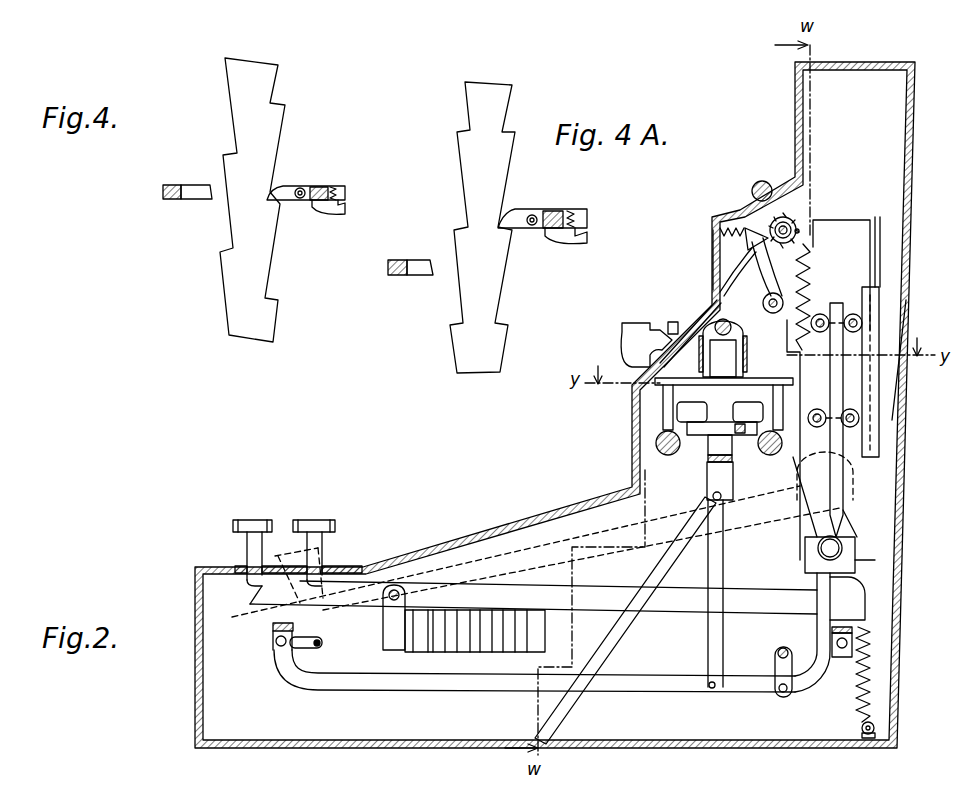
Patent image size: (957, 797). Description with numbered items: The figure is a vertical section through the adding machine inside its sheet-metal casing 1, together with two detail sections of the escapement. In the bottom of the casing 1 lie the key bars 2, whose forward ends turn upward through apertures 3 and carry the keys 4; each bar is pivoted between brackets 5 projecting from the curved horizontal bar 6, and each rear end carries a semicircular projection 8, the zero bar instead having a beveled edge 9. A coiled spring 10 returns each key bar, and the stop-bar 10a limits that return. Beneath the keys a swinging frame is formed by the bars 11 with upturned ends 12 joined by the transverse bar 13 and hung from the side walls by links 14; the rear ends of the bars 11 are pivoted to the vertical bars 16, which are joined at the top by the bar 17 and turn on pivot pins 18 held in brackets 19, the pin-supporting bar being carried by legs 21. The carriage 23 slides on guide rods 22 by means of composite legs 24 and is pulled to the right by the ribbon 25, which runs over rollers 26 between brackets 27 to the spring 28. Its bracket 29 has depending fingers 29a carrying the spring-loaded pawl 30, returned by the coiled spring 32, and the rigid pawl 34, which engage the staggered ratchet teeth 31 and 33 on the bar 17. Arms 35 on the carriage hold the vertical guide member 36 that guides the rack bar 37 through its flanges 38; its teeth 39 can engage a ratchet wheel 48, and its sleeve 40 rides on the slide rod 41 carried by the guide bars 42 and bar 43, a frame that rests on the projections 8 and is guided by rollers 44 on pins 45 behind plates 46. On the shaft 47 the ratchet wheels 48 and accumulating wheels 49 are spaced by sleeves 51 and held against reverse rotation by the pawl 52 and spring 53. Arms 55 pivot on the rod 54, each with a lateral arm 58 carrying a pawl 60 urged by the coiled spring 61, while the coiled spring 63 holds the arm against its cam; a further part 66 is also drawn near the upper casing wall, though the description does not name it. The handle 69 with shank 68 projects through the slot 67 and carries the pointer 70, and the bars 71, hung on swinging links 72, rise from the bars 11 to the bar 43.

In FIG. 2, the casing 1 is at (560, 512).
In FIG. 2, the key bars 2 is at (262, 590).
In FIG. 2, the apertures 3 is at (236, 566).
In FIG. 2, the keys 4 is at (313, 520).
In FIG. 2, the brackets 5 is at (388, 614).
In FIG. 2, the horizontal bar 6 is at (475, 642).
In FIG. 2, the upstanding projection 8 is at (866, 590).
In FIG. 2, the beveled upper edge 9 is at (852, 608).
In FIG. 2, the coiled spring 10 is at (866, 672).
In FIG. 2, the stop-bar 10a is at (842, 657).
In FIG. 2, the bars 11 is at (446, 676).
In FIG. 2, the upturned extremities 12 is at (272, 641).
In FIG. 2, the horizontal bar 13 is at (273, 627).
In FIG. 2, the links 14 is at (305, 650).
In FIG. 2, the vertical bars 16 is at (712, 650).
In FIG. 4, the bar 17 is at (252, 200).
In FIG. 4A, the bar 17 is at (482, 227).
In FIG. 2, the bar 17 is at (713, 495).
In FIG. 2, the pivot pins 18 is at (723, 500).
In FIG. 2, the brackets 19 is at (733, 482).
In FIG. 2, the legs 21 is at (655, 571).
In FIG. 2, the guide rods 22 is at (667, 455).
In FIG. 2, the carriage 23 is at (724, 389).
In FIG. 2, the composite legs 24 is at (662, 430).
In FIG. 2, the flexible tape or ribbon 25 is at (723, 358).
In FIG. 2, the rollers 26 is at (743, 340).
In FIG. 2, the brackets 27 is at (747, 352).
In FIG. 2, the spring 28 is at (728, 322).
In FIG. 2, the bracket 29 is at (705, 410).
In FIG. 4, the depending fingers 29a is at (172, 185).
In FIG. 4A, the depending fingers 29a is at (553, 213).
In FIG. 2, the depending fingers 29a is at (752, 410).
In FIG. 4, the pawl 30 is at (282, 188).
In FIG. 4A, the pawl 30 is at (514, 210).
In FIG. 2, the pawl 30 is at (740, 436).
In FIG. 4, the ratchet teeth 31 is at (279, 105).
In FIG. 4A, the ratchet teeth 31 is at (506, 130).
In FIG. 4, the coiled spring 32 is at (347, 197).
In FIG. 4A, the coiled spring 32 is at (580, 222).
In FIG. 4, the ratchet teeth 33 is at (232, 152).
In FIG. 4A, the ratchet teeth 33 is at (464, 130).
In FIG. 4, the rigid pawl 34 is at (197, 199).
In FIG. 4A, the rigid pawl 34 is at (418, 262).
In FIG. 2, the rigid pawl 34 is at (714, 439).
In FIG. 2, the arms 35 is at (801, 395).
In FIG. 2, the vertical guide member 36 is at (900, 330).
In FIG. 2, the rack bar 37 is at (848, 228).
In FIG. 2, the flanges 38 is at (883, 239).
In FIG. 2, the teeth 39 is at (795, 297).
In FIG. 2, the sleeve 40 is at (818, 548).
In FIG. 2, the slide rod 41 is at (805, 560).
In FIG. 2, the vertical guide bars 42 is at (846, 506).
In FIG. 2, the bar 43 is at (868, 560).
In FIG. 2, the rollers 44 is at (852, 314).
In FIG. 2, the pins 45 is at (880, 305).
In FIG. 2, the plate 46 is at (820, 314).
In FIG. 2, the horizontal shaft 47 is at (785, 217).
In FIG. 2, the ratchet wheel 48 is at (793, 224).
In FIG. 2, the accumulating wheel 49 is at (799, 231).
In FIG. 2, the sleeves 51 is at (797, 242).
In FIG. 2, the pawl 52 is at (745, 243).
In FIG. 2, the spring 53 is at (722, 290).
In FIG. 2, the rod 54 is at (782, 297).
In FIG. 2, the arms 55 is at (739, 272).
In FIG. 2, the arm 58 is at (752, 230).
In FIG. 2, the pawl 60 is at (772, 267).
In FIG. 2, the coiled spring 61 is at (722, 232).
In FIG. 2, the coiled spring 63 is at (716, 218).
In FIG. 2, the knob 66 is at (764, 181).
In FIG. 2, the transverse slot 67 is at (652, 350).
In FIG. 2, the shank 68 is at (664, 373).
In FIG. 2, the handle 69 is at (622, 340).
In FIG. 2, the pointer 70 is at (672, 322).
In FIG. 2, the bars 71 is at (748, 690).
In FIG. 2, the swinging links 72 is at (790, 680).